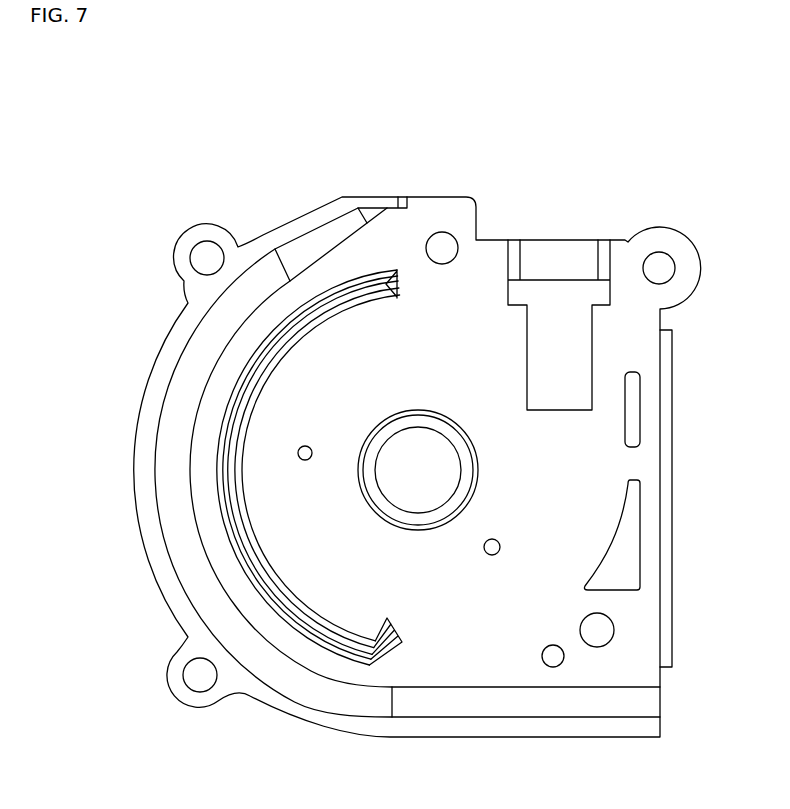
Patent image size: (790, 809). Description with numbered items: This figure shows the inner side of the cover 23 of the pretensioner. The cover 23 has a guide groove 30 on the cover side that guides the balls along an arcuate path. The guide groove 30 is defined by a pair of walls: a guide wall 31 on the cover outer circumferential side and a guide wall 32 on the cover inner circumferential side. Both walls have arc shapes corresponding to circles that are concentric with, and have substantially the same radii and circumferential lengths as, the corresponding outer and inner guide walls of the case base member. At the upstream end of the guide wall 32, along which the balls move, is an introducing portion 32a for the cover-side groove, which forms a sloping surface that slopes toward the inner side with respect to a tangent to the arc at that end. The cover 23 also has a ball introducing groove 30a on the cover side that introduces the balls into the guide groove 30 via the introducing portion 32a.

The cover 23 is at (290, 165).
The guide groove on the cover side 30 is at (213, 405).
The guide wall on the cover outer circumferential side 31 is at (165, 473).
The guide wall on the cover inner circumferential side 32 is at (257, 557).
The introducing portion for the cover-side groove 32a is at (387, 650).
The ball introducing groove on the cover side 30a is at (375, 675).